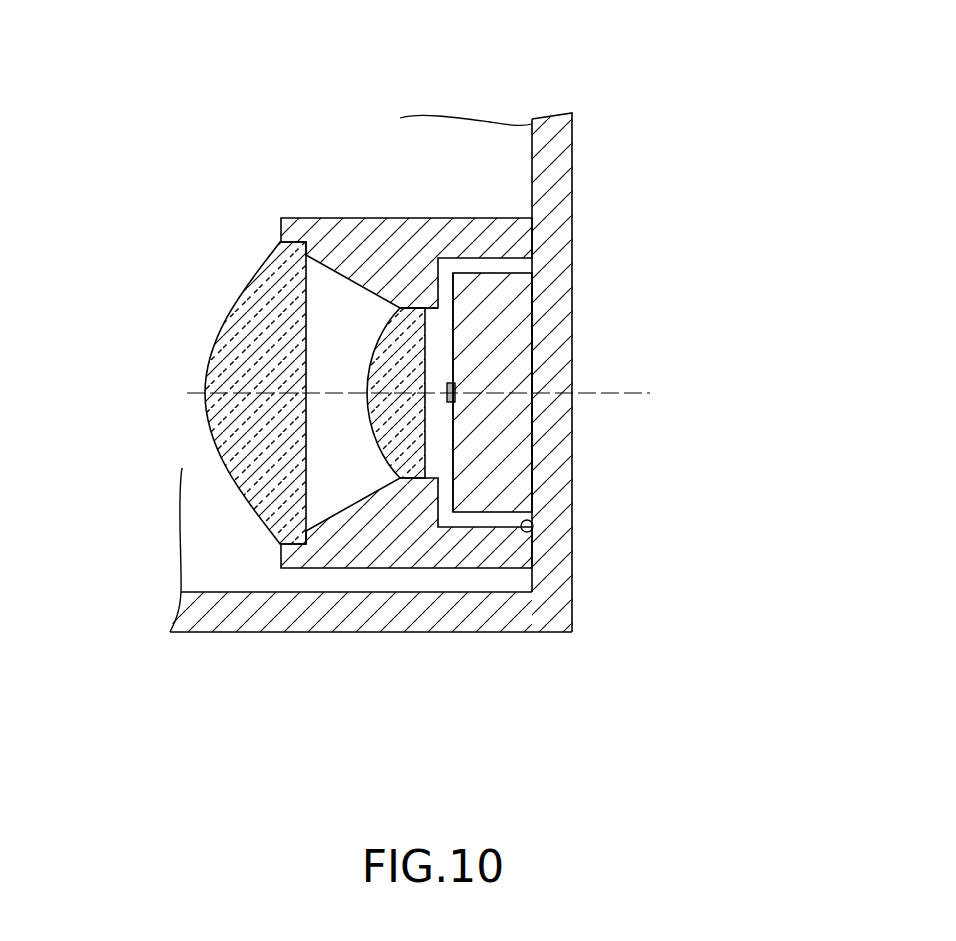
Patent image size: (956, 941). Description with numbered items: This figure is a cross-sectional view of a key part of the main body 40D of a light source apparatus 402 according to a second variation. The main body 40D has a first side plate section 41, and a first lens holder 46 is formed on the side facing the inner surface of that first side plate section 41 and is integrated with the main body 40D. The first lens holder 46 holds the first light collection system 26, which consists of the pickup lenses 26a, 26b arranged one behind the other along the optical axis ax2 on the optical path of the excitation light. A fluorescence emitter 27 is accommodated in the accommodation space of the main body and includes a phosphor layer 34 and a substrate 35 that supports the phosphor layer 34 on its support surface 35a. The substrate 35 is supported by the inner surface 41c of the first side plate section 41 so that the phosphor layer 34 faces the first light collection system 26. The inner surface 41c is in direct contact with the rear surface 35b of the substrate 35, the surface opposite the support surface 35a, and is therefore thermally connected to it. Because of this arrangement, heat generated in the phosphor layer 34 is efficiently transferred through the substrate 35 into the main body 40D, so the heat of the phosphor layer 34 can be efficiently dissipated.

The light source apparatus 402 is at (603, 106).
The first side plate section 41 is at (540, 178).
The main body 40D is at (580, 232).
The first lens holder 46 is at (347, 200).
The inner surface 41c is at (533, 527).
The substrate 35 is at (503, 479).
The support surface 35a is at (452, 300).
The rear surface 35b is at (533, 437).
The phosphor layer 34 is at (458, 388).
The fluorescence emitter 27 is at (430, 308).
The optical axis ax2 is at (597, 393).
The first light collection system 26 is at (315, 501).
The pickup lens 26a is at (260, 487).
The pickup lens 26b is at (385, 470).